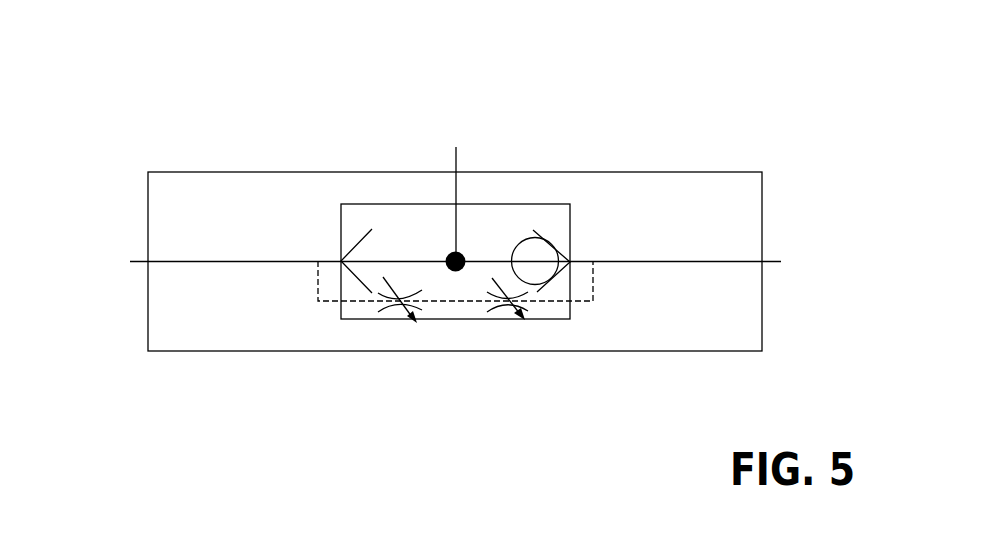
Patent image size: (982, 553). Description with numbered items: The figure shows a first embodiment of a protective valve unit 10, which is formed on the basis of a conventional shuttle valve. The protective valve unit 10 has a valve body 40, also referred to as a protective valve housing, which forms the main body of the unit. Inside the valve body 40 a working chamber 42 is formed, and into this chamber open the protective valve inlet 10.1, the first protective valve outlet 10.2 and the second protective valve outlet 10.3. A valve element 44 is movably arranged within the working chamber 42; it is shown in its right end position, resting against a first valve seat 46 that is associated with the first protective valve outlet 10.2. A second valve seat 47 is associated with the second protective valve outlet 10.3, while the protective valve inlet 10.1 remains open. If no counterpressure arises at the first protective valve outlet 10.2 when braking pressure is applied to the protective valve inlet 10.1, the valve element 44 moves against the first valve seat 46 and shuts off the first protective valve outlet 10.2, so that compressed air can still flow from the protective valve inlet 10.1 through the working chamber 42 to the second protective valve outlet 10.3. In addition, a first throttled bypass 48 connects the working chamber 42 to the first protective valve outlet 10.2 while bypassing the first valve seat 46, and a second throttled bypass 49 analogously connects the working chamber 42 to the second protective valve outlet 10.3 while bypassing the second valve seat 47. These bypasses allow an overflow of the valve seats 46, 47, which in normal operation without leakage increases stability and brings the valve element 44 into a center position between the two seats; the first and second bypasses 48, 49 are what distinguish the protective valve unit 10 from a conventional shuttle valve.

The protective valve unit 10 is at (190, 133).
The protective valve inlet 10.1 is at (456, 172).
The first protective valve outlet 10.2 is at (762, 262).
The second protective valve outlet 10.3 is at (148, 261).
The valve body 40 is at (625, 172).
The working chamber 42 is at (528, 204).
The valve element 44 is at (467, 270).
The first valve seat 46 is at (550, 285).
The second valve seat 47 is at (361, 288).
The first throttled bypass 48 is at (542, 303).
The second throttled bypass 49 is at (432, 293).